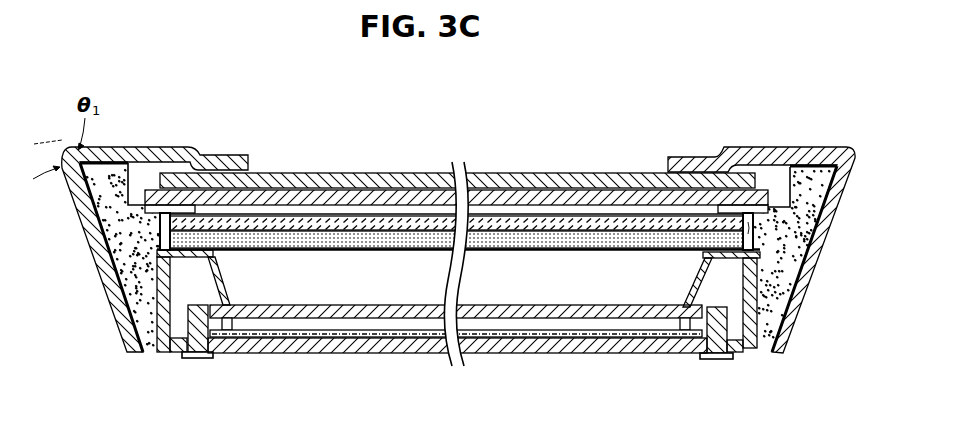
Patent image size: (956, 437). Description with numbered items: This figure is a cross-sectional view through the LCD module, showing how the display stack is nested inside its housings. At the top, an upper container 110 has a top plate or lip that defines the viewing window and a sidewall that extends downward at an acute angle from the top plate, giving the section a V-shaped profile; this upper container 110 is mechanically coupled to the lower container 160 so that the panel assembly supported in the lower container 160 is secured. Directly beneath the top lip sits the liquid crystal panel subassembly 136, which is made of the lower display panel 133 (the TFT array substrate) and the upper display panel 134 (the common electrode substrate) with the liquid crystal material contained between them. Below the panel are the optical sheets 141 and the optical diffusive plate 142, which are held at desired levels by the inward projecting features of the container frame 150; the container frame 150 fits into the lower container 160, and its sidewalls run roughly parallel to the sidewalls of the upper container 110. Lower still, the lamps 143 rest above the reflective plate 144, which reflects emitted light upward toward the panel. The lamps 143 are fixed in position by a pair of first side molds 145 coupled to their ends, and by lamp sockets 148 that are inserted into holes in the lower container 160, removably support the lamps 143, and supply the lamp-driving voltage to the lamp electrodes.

The upper container section 110 is at (195, 148).
The lower display panel 133 is at (526, 196).
The upper display panel 134 is at (480, 178).
The liquid crystal panel subassembly 136 is at (456, 135).
The optical sheets 141 is at (754, 227).
The optical diffusive plate 142 is at (813, 279).
The lamps 143 is at (362, 305).
The reflective plate 144 is at (417, 332).
The first side molds 145 is at (210, 263).
The lamp sockets 148 is at (196, 348).
The container frame 150 is at (137, 230).
The lower container section 160 is at (325, 346).